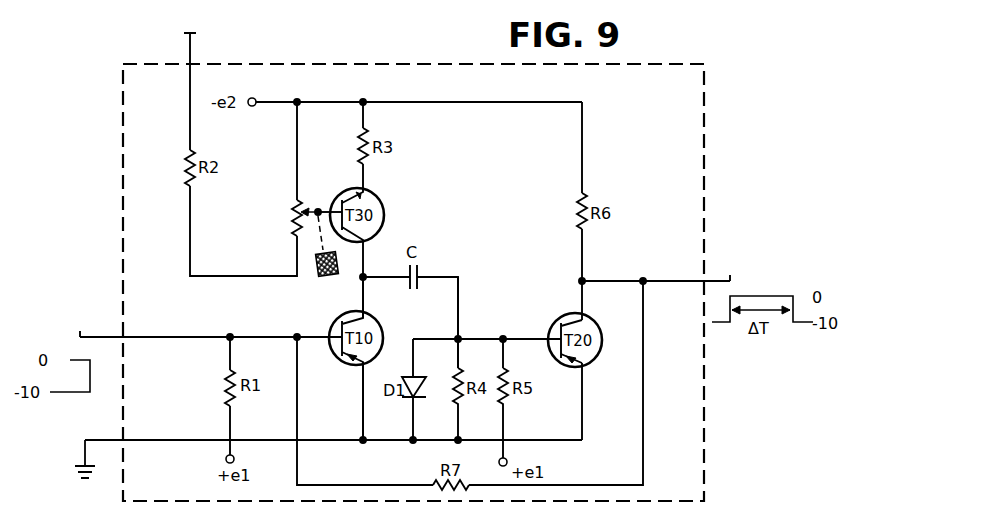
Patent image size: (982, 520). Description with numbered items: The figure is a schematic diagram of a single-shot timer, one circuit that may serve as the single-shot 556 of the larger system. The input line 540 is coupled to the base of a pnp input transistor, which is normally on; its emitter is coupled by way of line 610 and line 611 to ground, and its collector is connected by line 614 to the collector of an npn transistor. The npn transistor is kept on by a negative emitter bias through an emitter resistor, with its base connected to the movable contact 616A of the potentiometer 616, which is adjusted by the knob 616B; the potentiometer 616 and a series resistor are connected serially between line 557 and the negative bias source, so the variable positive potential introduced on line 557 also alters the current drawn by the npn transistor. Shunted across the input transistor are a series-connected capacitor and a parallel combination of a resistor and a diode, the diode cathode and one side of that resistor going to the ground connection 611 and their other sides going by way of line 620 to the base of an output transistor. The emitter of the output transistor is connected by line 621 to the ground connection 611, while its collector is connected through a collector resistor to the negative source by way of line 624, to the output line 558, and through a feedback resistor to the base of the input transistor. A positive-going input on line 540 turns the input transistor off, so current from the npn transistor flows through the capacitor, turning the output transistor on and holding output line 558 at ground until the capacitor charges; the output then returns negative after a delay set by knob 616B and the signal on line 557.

The single-shot 556 is at (123, 163).
The line 557 is at (190, 52).
The output line 558 is at (715, 281).
The input line 540 is at (108, 336).
The line 610 is at (363, 393).
The ground connection 611 is at (178, 440).
The line 614 is at (360, 297).
The potentiometer 616 is at (301, 212).
The movable contact 616A is at (314, 210).
The knob 616B is at (320, 278).
The line 620 is at (478, 338).
The line 621 is at (582, 398).
The line 624 is at (461, 103).